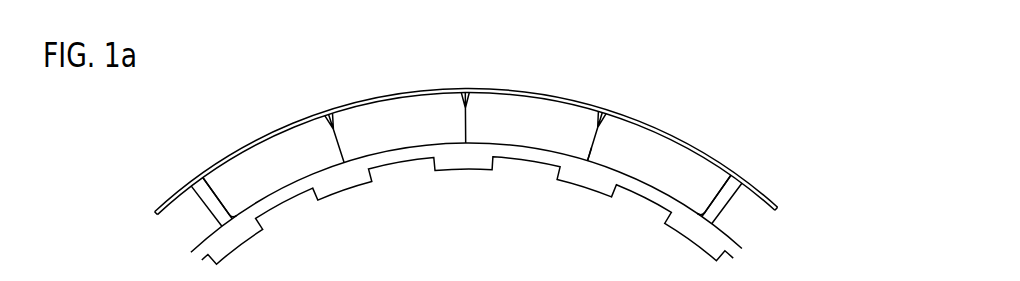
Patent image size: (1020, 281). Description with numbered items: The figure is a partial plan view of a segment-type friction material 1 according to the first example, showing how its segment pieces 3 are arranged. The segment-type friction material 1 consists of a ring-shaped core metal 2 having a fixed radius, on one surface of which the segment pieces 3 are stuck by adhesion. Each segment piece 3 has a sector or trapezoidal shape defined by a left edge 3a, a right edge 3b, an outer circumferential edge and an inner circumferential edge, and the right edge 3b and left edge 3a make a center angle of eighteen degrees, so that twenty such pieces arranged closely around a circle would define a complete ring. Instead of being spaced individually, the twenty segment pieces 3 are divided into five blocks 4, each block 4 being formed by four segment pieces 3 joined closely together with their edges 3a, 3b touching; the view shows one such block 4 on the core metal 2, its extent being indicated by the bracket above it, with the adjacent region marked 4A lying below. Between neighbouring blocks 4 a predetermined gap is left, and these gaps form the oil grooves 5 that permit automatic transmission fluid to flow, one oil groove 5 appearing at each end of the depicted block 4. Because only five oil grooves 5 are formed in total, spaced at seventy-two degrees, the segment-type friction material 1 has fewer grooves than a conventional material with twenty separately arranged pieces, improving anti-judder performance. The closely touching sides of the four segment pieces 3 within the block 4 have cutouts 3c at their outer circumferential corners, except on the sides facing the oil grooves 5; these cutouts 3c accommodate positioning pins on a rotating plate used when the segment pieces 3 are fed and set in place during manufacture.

The segment-type friction material 1 is at (222, 124).
The core metal 2 is at (459, 165).
The segment piece 3 is at (277, 143).
The left edge 3a is at (591, 144).
The right edge 3b is at (706, 207).
The cutout 3c is at (332, 112).
The block 4 is at (683, 53).
The magnet cover portion 4A is at (464, 274).
The oil groove 5 is at (208, 200).